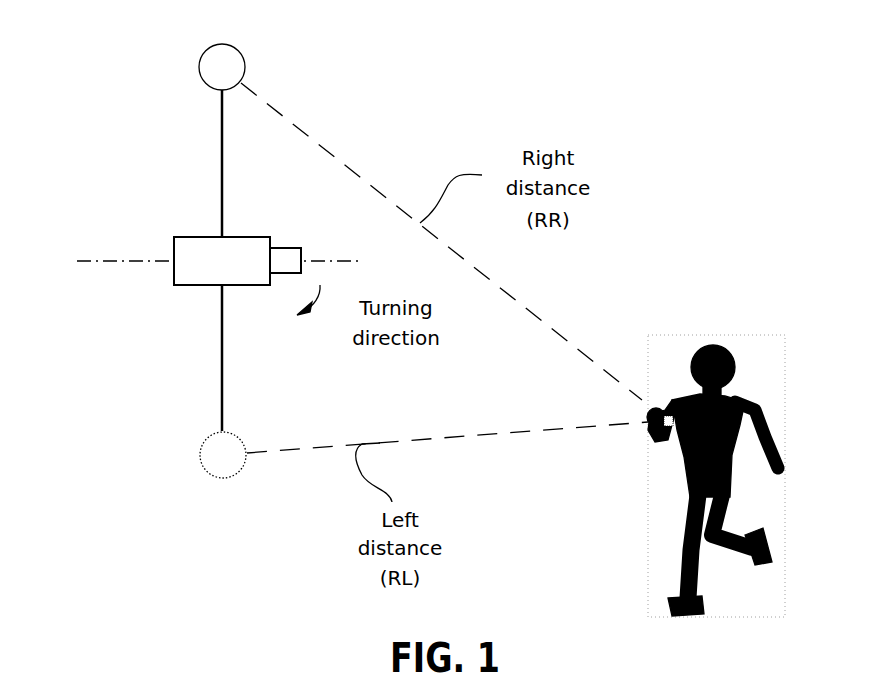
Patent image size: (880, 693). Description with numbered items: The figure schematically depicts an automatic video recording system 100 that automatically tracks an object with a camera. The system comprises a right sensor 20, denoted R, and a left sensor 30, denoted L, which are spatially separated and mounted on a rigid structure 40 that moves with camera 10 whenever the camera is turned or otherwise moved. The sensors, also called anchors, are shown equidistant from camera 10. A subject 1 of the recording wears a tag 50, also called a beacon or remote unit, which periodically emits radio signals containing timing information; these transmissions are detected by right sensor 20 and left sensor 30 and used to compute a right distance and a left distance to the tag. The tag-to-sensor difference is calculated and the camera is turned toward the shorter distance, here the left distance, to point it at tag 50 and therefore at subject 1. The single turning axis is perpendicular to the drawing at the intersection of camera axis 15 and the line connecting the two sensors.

The subject 1 is at (727, 393).
The camera 10 is at (200, 237).
The camera axis 15 is at (115, 261).
The right sensor 20 is at (199, 63).
The left sensor 30 is at (200, 437).
The rigid structure 40 is at (222, 333).
The tag 50 is at (668, 440).
The automatic video recording system 100 is at (455, 76).